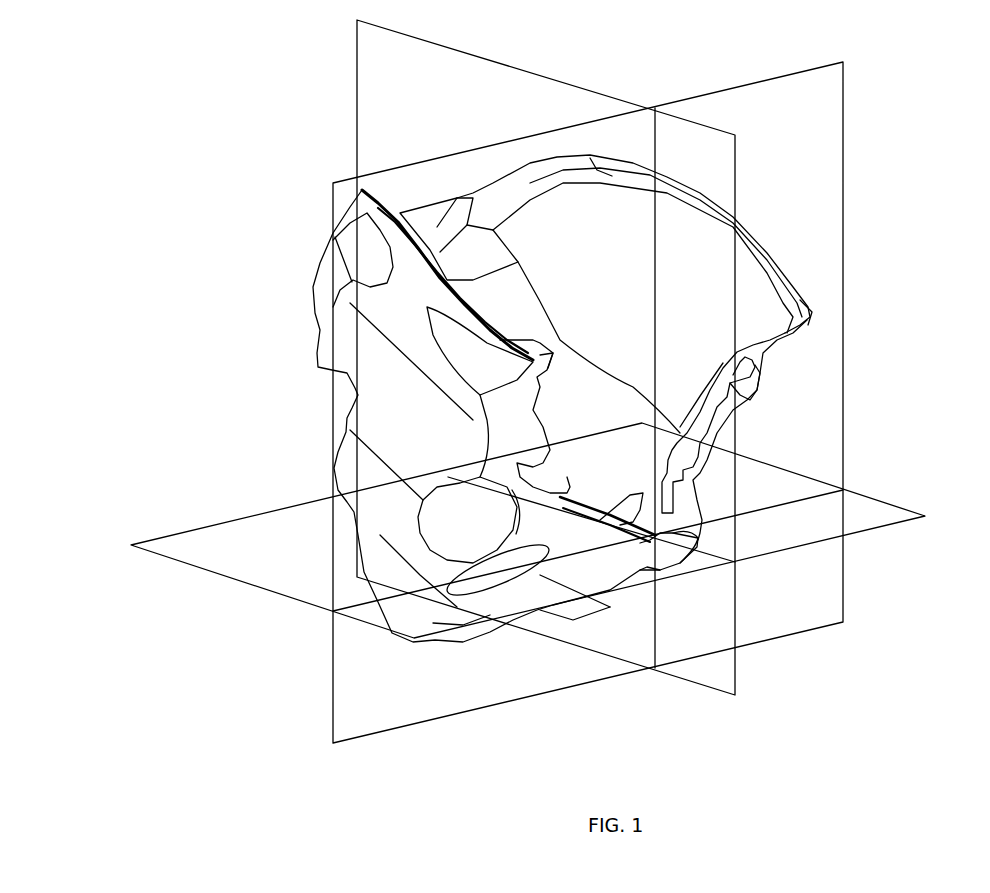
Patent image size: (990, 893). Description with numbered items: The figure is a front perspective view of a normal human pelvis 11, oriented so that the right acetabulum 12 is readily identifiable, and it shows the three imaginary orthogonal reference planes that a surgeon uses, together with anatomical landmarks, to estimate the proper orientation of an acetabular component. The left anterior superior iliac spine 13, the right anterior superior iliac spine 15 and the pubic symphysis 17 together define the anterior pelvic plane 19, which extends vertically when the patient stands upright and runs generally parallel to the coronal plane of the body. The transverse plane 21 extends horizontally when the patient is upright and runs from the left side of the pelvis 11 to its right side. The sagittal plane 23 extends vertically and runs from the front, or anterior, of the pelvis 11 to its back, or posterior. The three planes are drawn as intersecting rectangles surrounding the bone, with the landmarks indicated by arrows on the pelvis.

The pelvis 11 is at (450, 655).
The right acetabulum 12 is at (455, 538).
The left anterior superior iliac spine 13 is at (814, 317).
The right anterior superior iliac spine 15 is at (548, 370).
The pubic symphysis 17 is at (698, 538).
The anterior pelvic plane 19 is at (848, 122).
The transverse plane 21 is at (222, 578).
The sagittal plane 23 is at (355, 113).